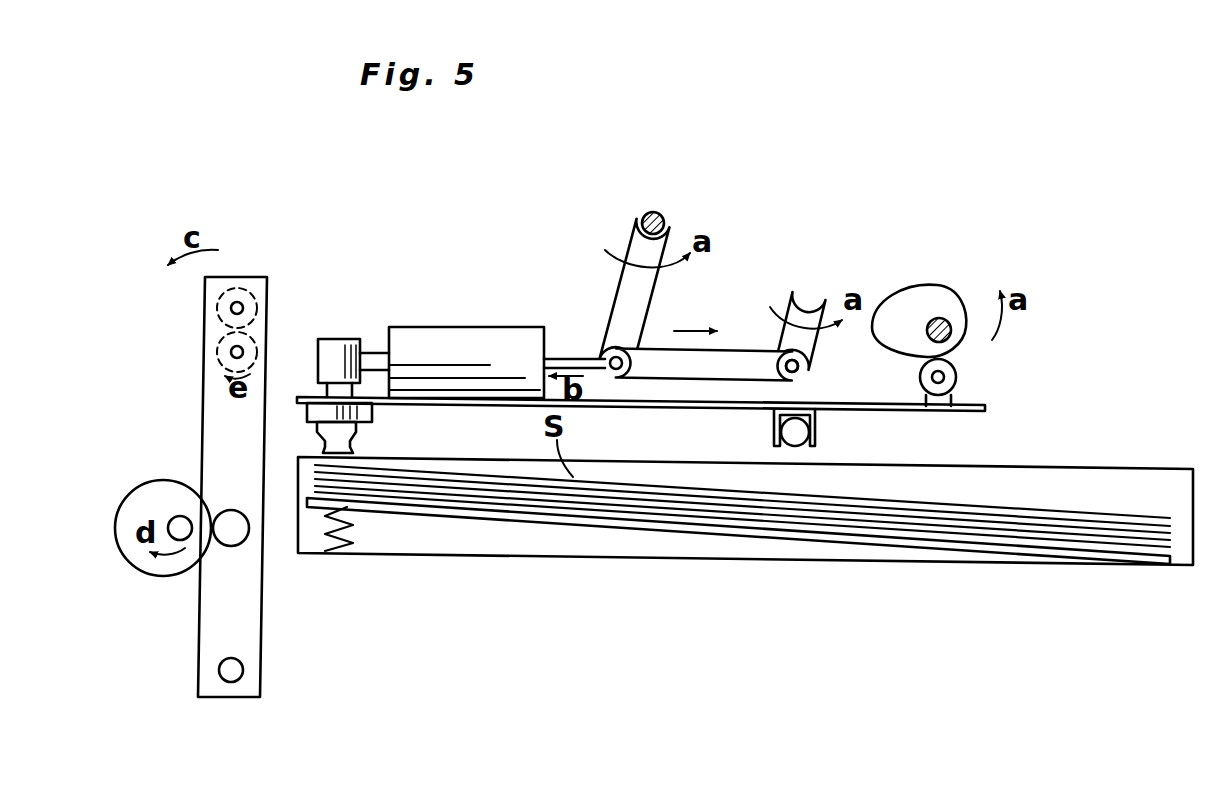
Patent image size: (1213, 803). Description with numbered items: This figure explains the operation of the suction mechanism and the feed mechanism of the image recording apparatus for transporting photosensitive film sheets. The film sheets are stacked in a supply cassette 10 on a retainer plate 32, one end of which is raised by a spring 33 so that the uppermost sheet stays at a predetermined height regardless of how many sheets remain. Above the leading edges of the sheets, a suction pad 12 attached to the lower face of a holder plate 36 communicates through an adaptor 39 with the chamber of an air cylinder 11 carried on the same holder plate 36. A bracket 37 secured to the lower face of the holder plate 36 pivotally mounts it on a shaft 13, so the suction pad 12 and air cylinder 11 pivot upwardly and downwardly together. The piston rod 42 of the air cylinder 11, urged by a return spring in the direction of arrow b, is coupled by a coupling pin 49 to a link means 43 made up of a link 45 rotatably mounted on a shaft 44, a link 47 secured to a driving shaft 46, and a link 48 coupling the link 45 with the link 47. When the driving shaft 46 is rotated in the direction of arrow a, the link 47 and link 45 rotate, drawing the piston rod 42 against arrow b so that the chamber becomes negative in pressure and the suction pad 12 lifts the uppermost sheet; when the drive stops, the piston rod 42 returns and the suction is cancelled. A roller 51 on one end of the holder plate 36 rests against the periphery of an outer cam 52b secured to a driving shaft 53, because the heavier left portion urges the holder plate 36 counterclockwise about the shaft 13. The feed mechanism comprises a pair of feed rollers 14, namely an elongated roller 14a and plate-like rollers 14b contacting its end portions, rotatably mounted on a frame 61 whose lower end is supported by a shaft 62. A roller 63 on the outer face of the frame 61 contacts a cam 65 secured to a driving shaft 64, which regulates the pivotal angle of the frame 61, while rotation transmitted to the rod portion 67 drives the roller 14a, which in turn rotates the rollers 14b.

The supply cassette 10 is at (550, 535).
The air cylinder 11 is at (452, 327).
The suction pad 12 is at (312, 427).
The shaft 13 is at (795, 432).
The feed rollers 14 is at (245, 292).
The elongated roller 14a is at (217, 367).
The plate-like rollers 14b is at (266, 302).
The retainer plate 32 is at (460, 513).
The spring 33 is at (350, 548).
The holder plate 36 is at (690, 410).
The bracket 37 is at (776, 416).
The adaptor 39 is at (346, 350).
The piston rod 42 is at (567, 352).
The link means 43 is at (720, 226).
The shaft 44 is at (653, 212).
The link 45 is at (634, 245).
The driving shaft 46 is at (815, 285).
The link 47 is at (806, 344).
The link 48 is at (735, 360).
The coupling pin 49 is at (617, 380).
The roller 51 is at (946, 377).
The outer cam 52b is at (948, 285).
The driving shaft 53 is at (948, 322).
The frame 61 is at (205, 420).
The shaft 62 is at (232, 672).
The roller 63 is at (232, 530).
The driving shaft 64 is at (178, 527).
The cam 65 is at (126, 540).
The rod portion 67 is at (237, 352).